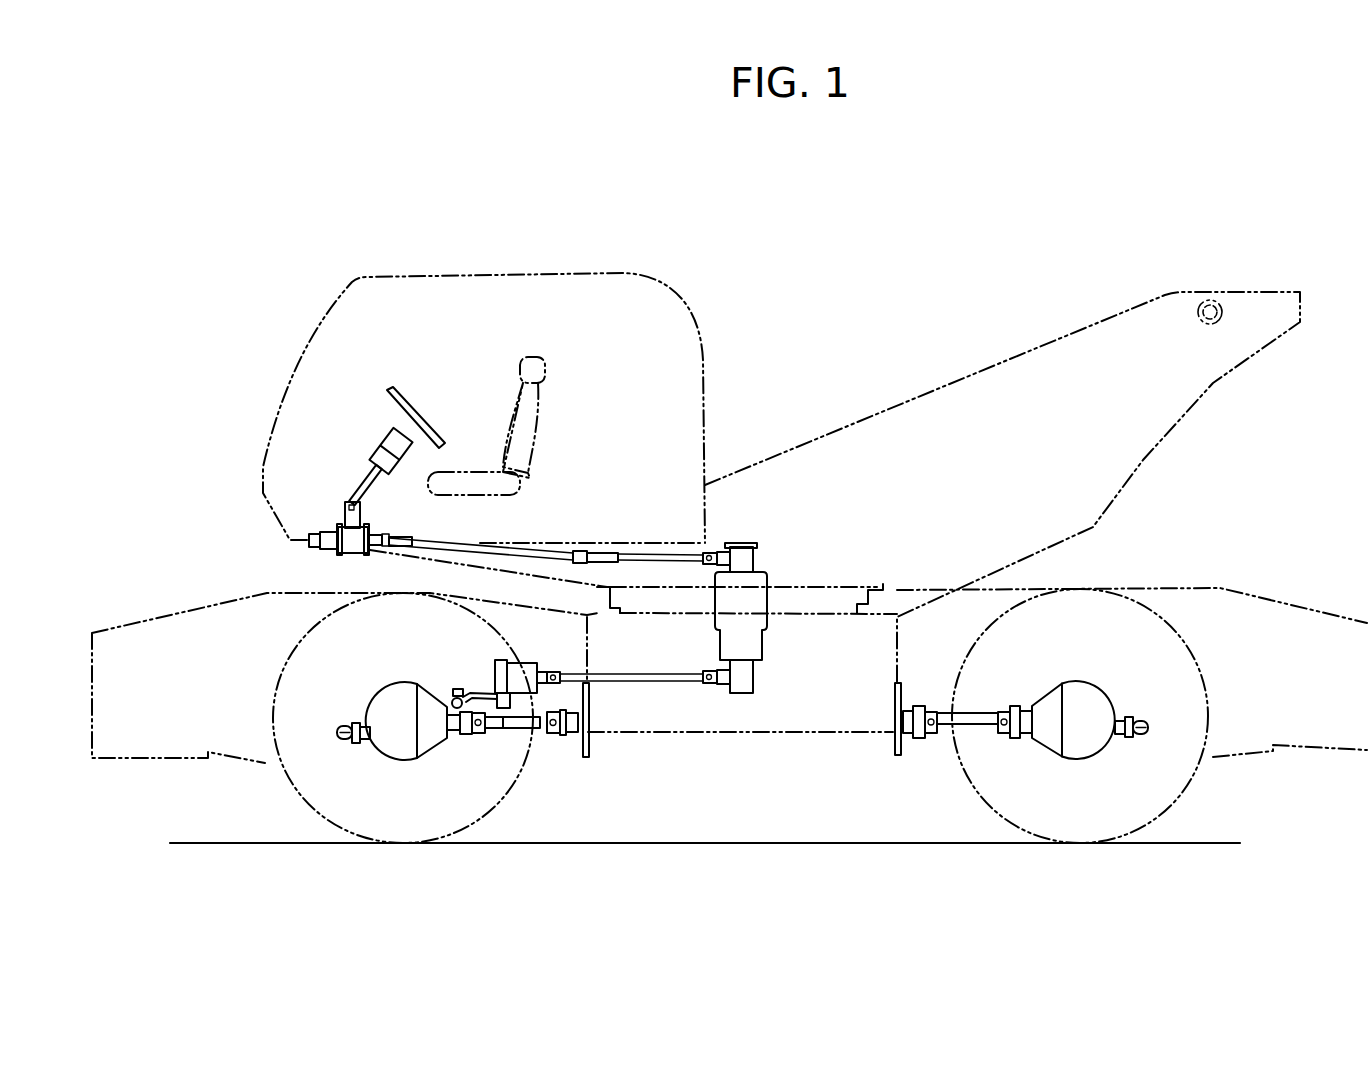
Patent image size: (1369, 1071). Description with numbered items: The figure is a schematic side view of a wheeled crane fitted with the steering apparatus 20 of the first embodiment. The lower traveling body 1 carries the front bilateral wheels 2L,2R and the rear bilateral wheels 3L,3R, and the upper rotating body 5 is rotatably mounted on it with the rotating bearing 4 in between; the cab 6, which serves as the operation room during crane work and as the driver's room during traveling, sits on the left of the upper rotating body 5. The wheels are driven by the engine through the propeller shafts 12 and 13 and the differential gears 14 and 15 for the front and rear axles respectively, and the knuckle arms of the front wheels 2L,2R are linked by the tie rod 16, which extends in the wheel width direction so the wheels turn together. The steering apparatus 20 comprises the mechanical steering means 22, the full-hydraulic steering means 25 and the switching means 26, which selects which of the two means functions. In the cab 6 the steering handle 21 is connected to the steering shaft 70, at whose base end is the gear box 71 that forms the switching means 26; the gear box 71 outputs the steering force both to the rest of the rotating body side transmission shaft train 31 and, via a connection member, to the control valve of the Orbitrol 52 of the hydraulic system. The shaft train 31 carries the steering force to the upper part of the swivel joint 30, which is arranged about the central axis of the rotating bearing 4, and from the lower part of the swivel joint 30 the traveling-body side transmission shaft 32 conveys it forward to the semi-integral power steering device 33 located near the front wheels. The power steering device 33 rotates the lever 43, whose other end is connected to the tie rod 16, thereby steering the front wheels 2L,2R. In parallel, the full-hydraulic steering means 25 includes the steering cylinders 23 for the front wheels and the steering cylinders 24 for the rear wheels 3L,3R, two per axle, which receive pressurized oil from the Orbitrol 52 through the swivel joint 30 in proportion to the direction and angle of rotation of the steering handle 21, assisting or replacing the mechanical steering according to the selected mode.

The lower traveling body 1 is at (1195, 562).
The front bilateral wheels 2L,2R is at (513, 790).
The rear bilateral wheels 3L,3R is at (1200, 785).
The rotating bearing 4 is at (827, 584).
The upper rotating body 5 is at (885, 407).
The cab 6 is at (468, 272).
The propeller shaft 12 is at (520, 729).
The propeller shaft 13 is at (975, 720).
The differential gear 14 is at (405, 690).
The differential gear 15 is at (1082, 690).
The tie rod 16 is at (452, 738).
The steering apparatus 20 is at (327, 438).
The steering handle 21 is at (398, 396).
The mechanical steering means 22 is at (653, 540).
The steering cylinder 23 is at (355, 723).
The steering cylinder 24 is at (1130, 721).
The full-hydraulic steering means 25 is at (308, 759).
The switching means 26 is at (291, 558).
The swivel joint 30 is at (760, 640).
The rotating body side transmission shaft train 31 is at (553, 548).
The traveling-body side transmission shaft 32 is at (645, 675).
The power steering device 33 is at (528, 663).
The lever 43 is at (466, 689).
The Orbitrol 52 is at (328, 544).
The steering shaft 70 is at (377, 482).
The gear box 71 is at (348, 552).